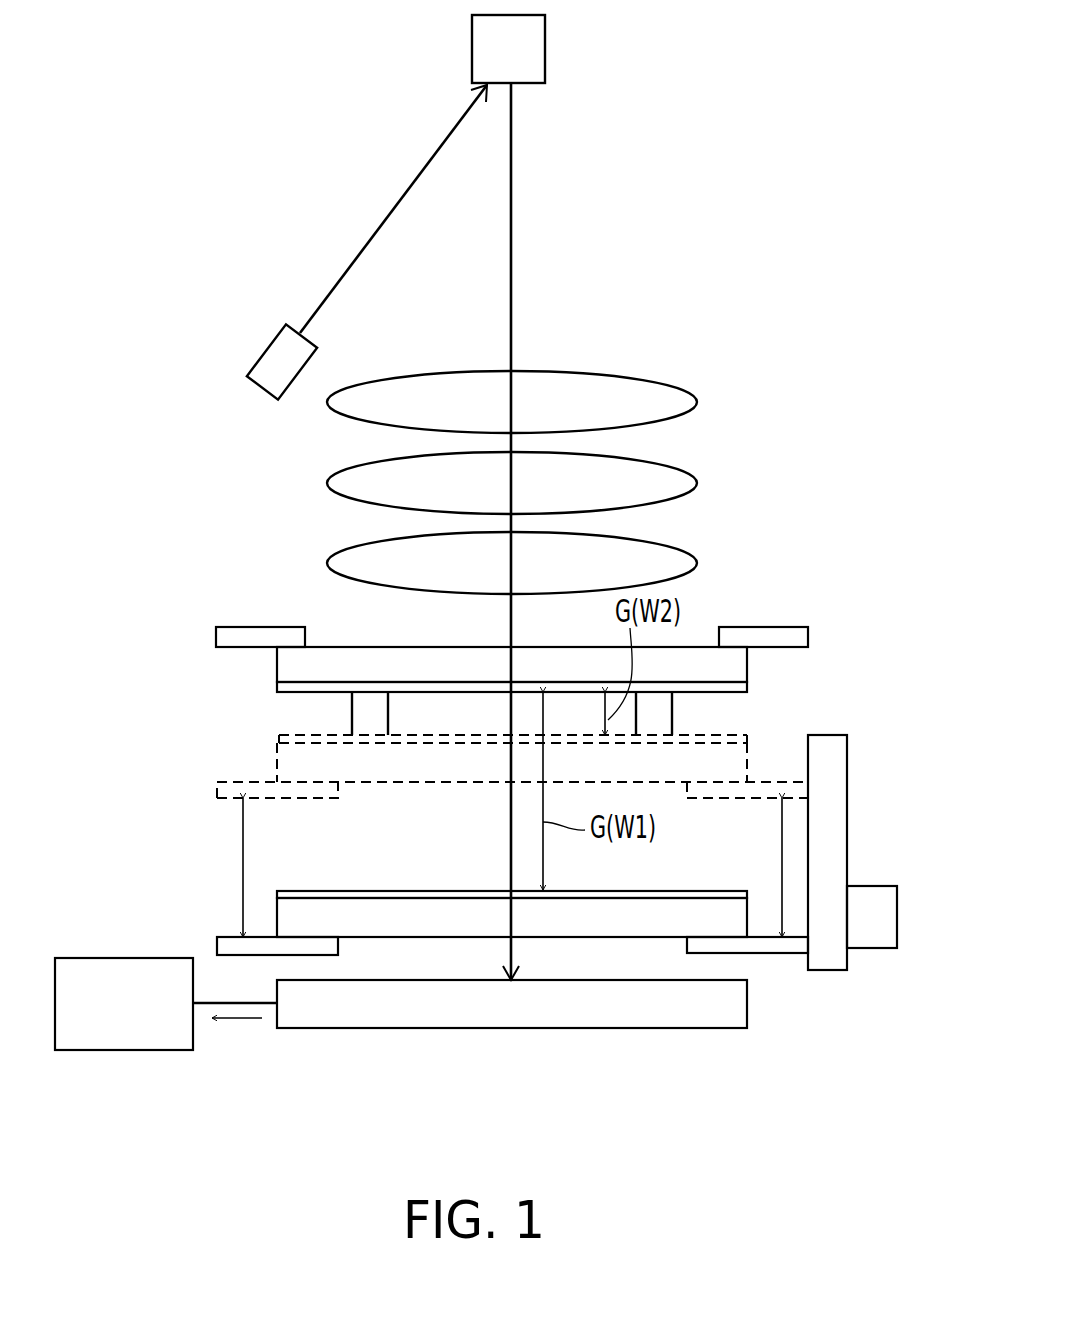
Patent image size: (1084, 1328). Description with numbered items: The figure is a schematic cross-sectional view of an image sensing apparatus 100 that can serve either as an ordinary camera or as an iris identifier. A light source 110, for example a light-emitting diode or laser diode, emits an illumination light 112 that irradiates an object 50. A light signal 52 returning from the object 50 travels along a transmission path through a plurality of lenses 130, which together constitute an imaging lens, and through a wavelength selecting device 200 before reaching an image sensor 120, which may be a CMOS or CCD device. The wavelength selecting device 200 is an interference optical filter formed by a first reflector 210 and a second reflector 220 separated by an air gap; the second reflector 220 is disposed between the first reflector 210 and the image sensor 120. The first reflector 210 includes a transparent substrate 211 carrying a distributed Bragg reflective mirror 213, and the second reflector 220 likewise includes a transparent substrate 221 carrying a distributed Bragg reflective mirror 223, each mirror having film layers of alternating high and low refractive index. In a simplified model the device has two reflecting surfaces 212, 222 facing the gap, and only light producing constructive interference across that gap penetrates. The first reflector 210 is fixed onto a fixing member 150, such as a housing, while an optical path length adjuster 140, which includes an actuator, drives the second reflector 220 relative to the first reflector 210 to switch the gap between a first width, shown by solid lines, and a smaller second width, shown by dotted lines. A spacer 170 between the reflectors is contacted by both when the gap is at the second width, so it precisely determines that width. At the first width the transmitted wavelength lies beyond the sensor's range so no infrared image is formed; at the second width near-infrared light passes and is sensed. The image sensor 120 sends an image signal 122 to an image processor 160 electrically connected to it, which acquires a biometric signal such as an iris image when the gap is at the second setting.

The object 50 is at (545, 48).
The light signal 52 is at (512, 190).
The light source 110 is at (283, 353).
The illumination light 112 is at (395, 210).
The lens 130 is at (683, 402).
The fixing member 150 is at (780, 637).
The first reflector 210 is at (582, 642).
The transparent substrate 211 is at (740, 667).
The distributed Bragg reflective mirror 213 is at (748, 690).
The reflecting surface 212 is at (432, 695).
The spacer 170 is at (665, 720).
The wavelength selecting device 200 is at (245, 741).
The reflecting surface 222 is at (482, 735).
The second reflector 220 is at (565, 945).
The transparent substrate 221 is at (645, 920).
The distributed Bragg reflective mirror 223 is at (718, 895).
The optical path length adjuster 140 is at (870, 937).
The image sensor 120 is at (590, 1008).
The image signal 122 is at (250, 1018).
The image processor 160 is at (124, 1050).
The image sensing apparatus 100 is at (912, 1138).